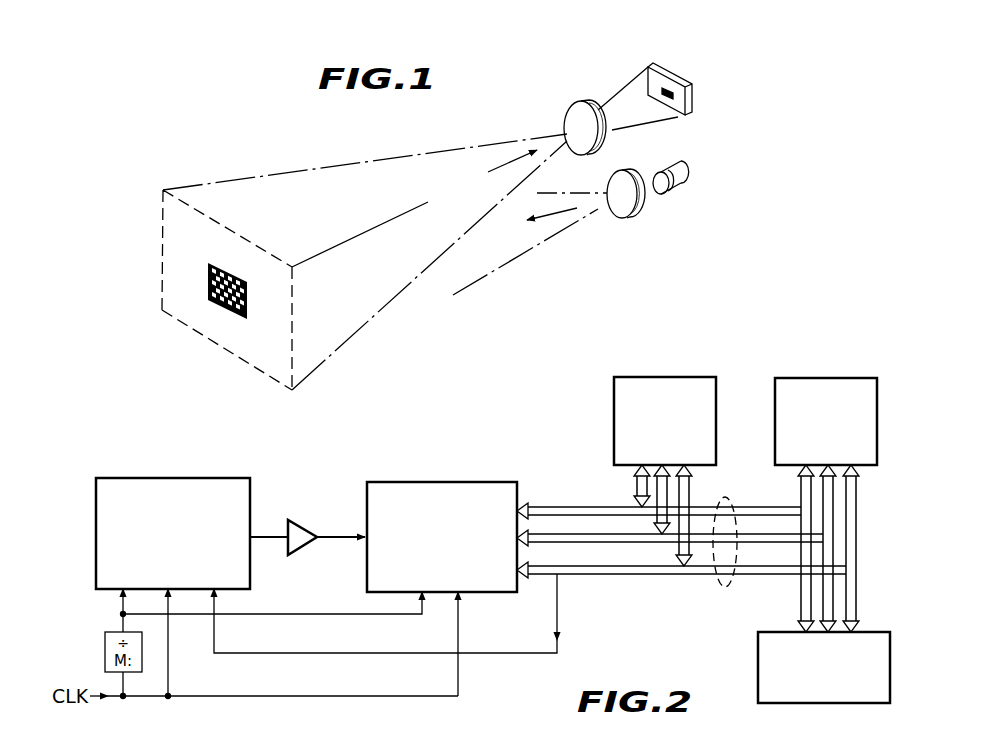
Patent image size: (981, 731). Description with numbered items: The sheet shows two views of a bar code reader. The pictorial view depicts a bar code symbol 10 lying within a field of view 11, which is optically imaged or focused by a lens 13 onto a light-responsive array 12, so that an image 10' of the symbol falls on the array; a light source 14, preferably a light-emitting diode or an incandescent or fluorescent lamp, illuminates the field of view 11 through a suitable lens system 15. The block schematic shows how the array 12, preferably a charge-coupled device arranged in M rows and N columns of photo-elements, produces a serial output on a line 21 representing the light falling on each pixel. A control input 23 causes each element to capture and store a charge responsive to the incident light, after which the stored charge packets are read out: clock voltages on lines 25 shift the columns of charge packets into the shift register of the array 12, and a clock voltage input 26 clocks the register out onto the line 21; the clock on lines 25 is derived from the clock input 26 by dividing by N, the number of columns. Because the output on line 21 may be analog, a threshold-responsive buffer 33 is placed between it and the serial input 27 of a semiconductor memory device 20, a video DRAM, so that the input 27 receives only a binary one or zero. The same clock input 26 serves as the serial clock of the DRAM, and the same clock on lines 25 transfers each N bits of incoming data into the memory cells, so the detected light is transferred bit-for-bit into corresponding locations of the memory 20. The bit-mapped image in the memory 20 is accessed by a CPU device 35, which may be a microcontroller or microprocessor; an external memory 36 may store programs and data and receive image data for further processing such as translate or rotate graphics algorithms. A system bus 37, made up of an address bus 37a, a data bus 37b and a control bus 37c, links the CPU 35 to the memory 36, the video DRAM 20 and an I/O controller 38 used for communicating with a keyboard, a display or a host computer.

In FIG. 1, the bar code symbol 10 is at (220, 327).
In FIG. 1, the image of bar code symbol 10' is at (675, 49).
In FIG. 1, the field of view 11 is at (178, 334).
In FIG. 1, the light-responsive array 12 is at (685, 78).
In FIG. 2, the light-responsive array 12 is at (173, 478).
In FIG. 1, the lens 13 is at (572, 104).
In FIG. 1, the light source 14 is at (683, 187).
In FIG. 1, the lens system 15 is at (633, 218).
In FIG. 2, the semiconductor memory device 20 is at (440, 482).
In FIG. 2, the line 21 is at (268, 533).
In FIG. 2, the control input 23 is at (217, 639).
In FIG. 2, the lines 25 is at (120, 600).
In FIG. 2, the clock voltage input 26 is at (172, 680).
In FIG. 2, the serial input 27 is at (338, 540).
In FIG. 2, the threshold-responsive buffer 33 is at (307, 527).
In FIG. 2, the CPU device 35 is at (614, 418).
In FIG. 2, the external memory 36 is at (845, 378).
In FIG. 2, the system bus 37 is at (727, 587).
In FIG. 2, the address bus 37a is at (560, 505).
In FIG. 2, the data bus 37b is at (597, 545).
In FIG. 2, the control bus 37c is at (637, 578).
In FIG. 2, the I/O controller 38 is at (758, 655).